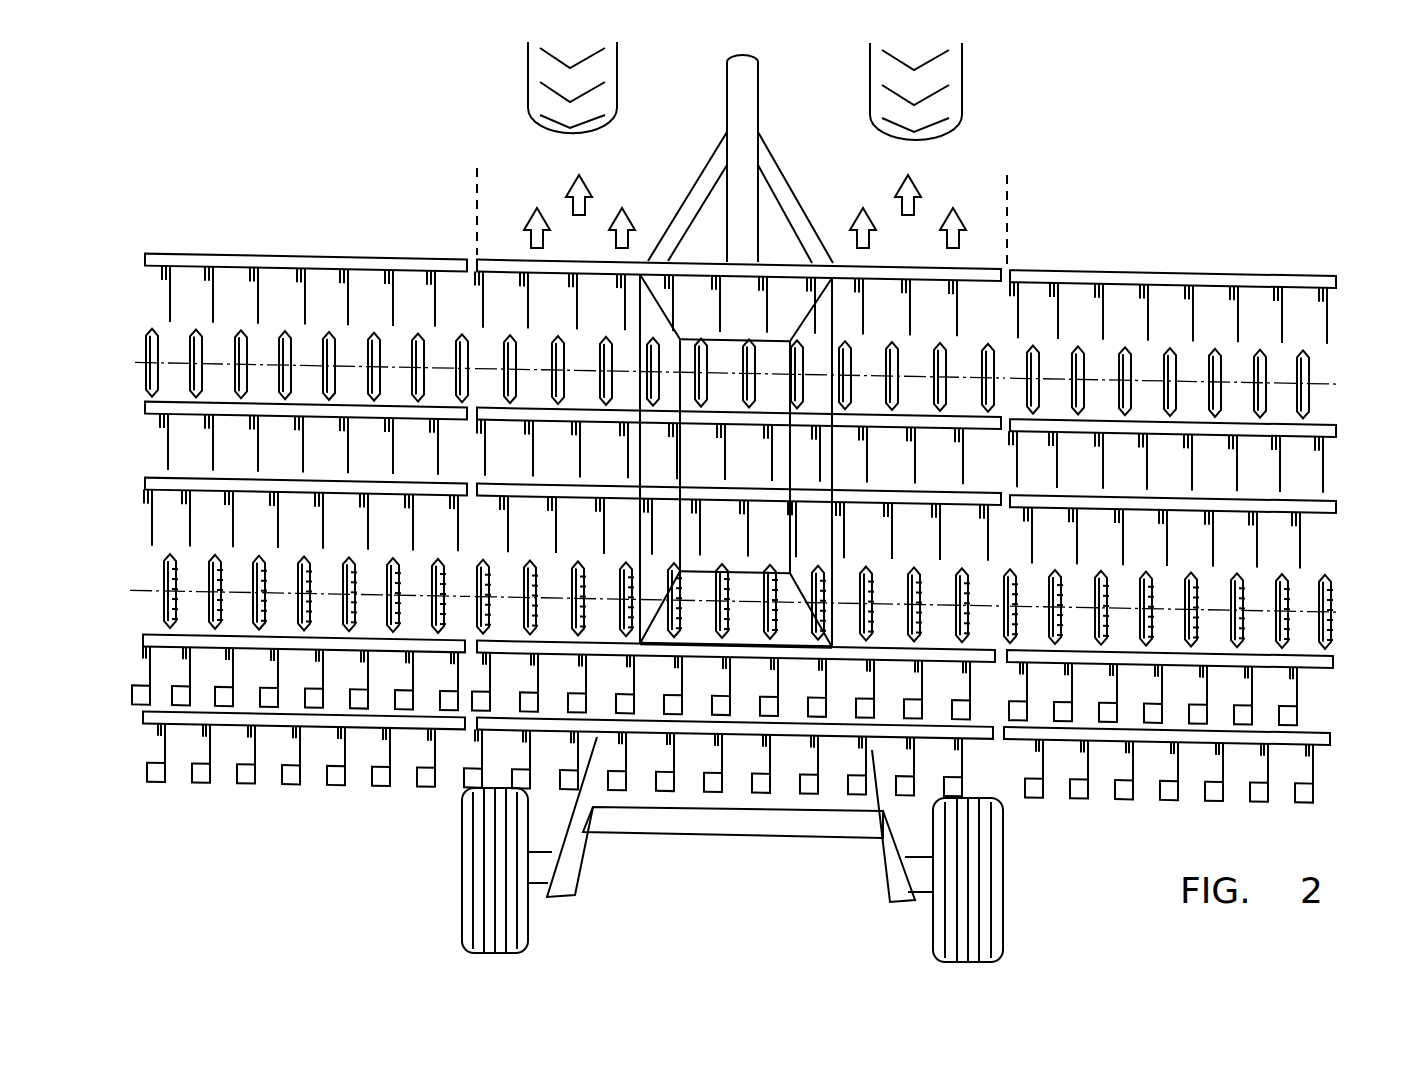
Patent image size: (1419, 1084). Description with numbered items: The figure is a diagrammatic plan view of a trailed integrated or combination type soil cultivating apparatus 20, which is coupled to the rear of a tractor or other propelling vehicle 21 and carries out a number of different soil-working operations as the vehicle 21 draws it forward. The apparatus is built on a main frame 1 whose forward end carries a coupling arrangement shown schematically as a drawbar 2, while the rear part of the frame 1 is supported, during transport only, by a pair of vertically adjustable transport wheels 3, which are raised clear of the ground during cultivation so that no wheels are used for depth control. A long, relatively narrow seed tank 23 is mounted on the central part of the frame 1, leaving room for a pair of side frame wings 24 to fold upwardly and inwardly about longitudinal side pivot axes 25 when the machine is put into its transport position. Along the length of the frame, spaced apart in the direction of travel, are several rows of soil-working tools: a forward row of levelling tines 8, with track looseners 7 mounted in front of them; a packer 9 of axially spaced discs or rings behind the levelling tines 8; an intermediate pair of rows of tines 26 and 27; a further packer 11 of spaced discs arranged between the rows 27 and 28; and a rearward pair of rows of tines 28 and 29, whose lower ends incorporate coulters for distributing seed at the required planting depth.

The frame 1 is at (793, 840).
The drawbar 2 is at (750, 98).
The transport wheels 3 is at (480, 890).
The track looseners 7 is at (589, 190).
The forward row of levelling tines 8 is at (1343, 300).
The packer 9 is at (1318, 372).
The further packer 11 is at (1340, 593).
The soil cultivating apparatus 20 is at (1117, 253).
The tractor or propelling vehicle 21 is at (968, 98).
The seed tank 23 is at (760, 475).
The side frame wings 24 is at (285, 248).
The longitudinal side pivot axes 25 is at (744, 197).
The intermediate row of tines 26 is at (1333, 447).
The intermediate row of tines 27 is at (1312, 525).
The rearward row of tines 28 is at (1312, 685).
The rearward row of tines 29 is at (1330, 762).